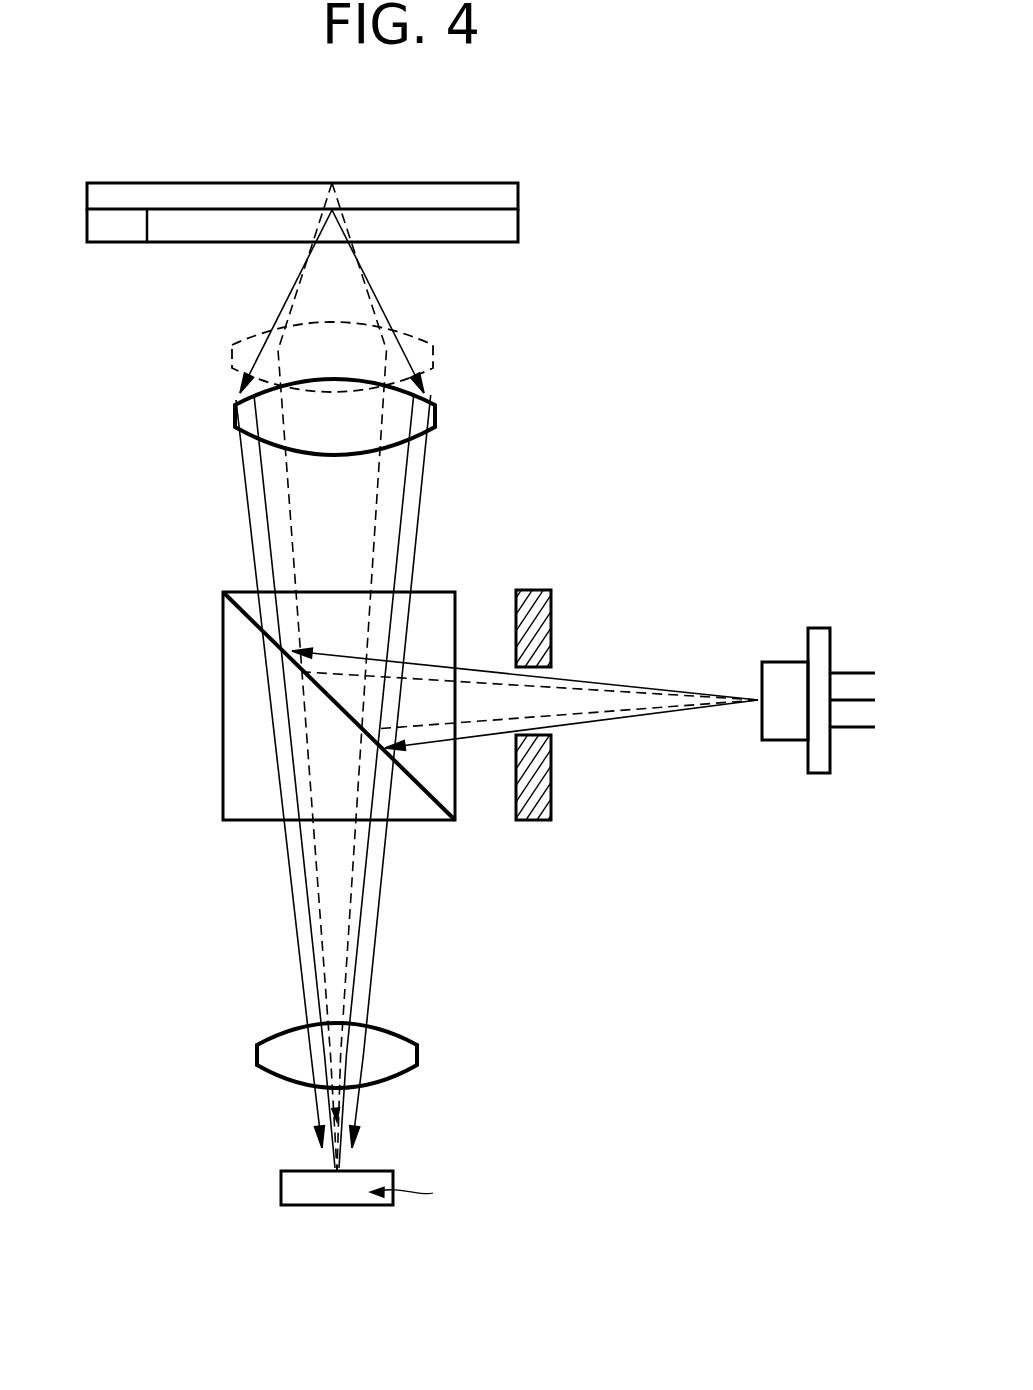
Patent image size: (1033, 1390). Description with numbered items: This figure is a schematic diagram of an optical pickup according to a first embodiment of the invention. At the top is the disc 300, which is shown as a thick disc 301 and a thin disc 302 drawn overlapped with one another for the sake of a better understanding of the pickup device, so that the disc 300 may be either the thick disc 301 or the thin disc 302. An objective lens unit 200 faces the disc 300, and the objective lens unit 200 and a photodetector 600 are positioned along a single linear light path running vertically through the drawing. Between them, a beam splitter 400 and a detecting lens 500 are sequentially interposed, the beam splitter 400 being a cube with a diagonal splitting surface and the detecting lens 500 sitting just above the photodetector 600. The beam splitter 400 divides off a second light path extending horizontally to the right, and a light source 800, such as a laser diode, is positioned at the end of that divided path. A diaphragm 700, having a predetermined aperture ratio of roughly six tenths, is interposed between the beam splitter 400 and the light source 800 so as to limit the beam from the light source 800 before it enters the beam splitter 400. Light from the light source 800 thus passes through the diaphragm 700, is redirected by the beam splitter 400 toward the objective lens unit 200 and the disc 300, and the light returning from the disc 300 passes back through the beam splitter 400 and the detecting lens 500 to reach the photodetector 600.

The objective lens unit 200 is at (437, 418).
The disc 300 is at (409, 212).
The thick disc 301 is at (512, 195).
The thin disc 302 is at (510, 228).
The beam splitter 400 is at (223, 622).
The detecting lens 500 is at (387, 1030).
The photodetector 600 is at (354, 1207).
The diaphragm 700 is at (537, 590).
The light source 800 is at (788, 662).